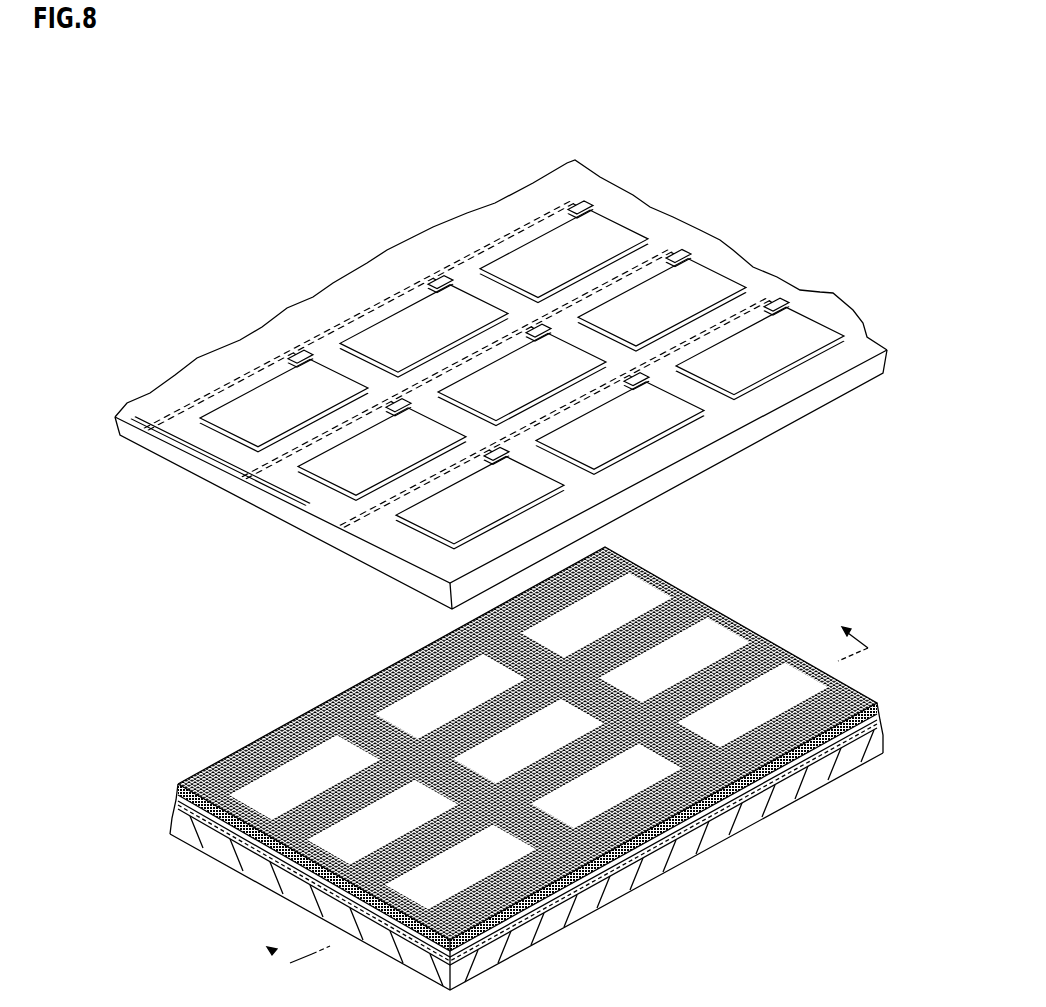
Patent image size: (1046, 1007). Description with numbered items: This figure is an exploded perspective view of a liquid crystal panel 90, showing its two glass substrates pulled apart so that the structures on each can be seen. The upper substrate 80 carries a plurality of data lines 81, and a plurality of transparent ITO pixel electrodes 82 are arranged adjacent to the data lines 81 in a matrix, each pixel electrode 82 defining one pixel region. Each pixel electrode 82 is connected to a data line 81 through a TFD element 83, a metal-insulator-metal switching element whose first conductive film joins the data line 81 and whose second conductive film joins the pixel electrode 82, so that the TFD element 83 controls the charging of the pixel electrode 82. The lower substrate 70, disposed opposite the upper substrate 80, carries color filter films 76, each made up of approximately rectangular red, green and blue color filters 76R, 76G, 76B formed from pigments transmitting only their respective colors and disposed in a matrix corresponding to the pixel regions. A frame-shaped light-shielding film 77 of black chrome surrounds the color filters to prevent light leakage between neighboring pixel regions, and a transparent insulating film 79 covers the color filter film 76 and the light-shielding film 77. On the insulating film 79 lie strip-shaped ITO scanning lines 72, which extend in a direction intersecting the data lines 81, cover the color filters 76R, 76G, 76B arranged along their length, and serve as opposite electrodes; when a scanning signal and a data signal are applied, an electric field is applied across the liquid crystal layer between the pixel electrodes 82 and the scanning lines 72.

The liquid crystal panel 90 is at (171, 133).
The upper substrate 80 is at (205, 455).
The data lines 81 is at (215, 483).
The pixel electrodes 82 is at (330, 470).
The TFD elements 83 is at (309, 357).
The scanning lines 72 is at (232, 743).
The color filter films 76 is at (857, 606).
The blue color filter 76B is at (640, 590).
The green color filter 76G is at (718, 632).
The red color filter 76R is at (798, 680).
The light-shielding film 77 is at (688, 840).
The transparent insulating film 79 is at (733, 802).
The lower substrate 70 is at (623, 887).